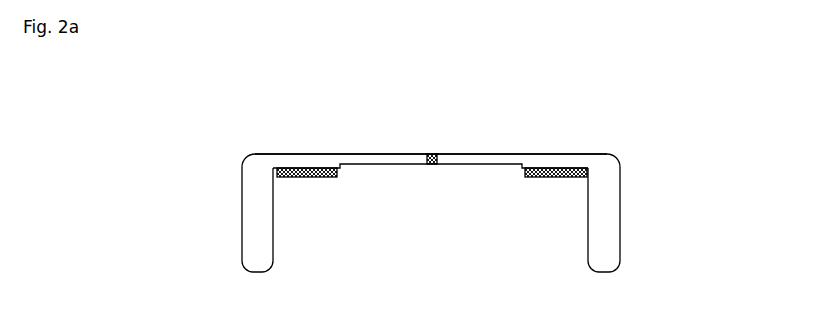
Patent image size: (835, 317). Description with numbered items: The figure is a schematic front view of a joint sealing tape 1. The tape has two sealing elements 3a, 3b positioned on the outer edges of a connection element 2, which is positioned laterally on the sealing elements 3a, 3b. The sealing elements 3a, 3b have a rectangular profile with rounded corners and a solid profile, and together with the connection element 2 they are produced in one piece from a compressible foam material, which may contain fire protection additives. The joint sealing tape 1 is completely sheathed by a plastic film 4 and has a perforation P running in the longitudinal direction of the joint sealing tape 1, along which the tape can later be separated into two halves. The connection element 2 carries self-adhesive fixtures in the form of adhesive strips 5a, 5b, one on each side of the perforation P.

The joint sealing tape 1 is at (434, 167).
The connection element 2 is at (490, 155).
The sealing element 3a is at (255, 210).
The sealing element 3b is at (613, 212).
The plastic film 4 is at (590, 154).
The adhesive strip 5a is at (310, 174).
The adhesive strip 5b is at (555, 178).
The perforation P is at (431, 164).